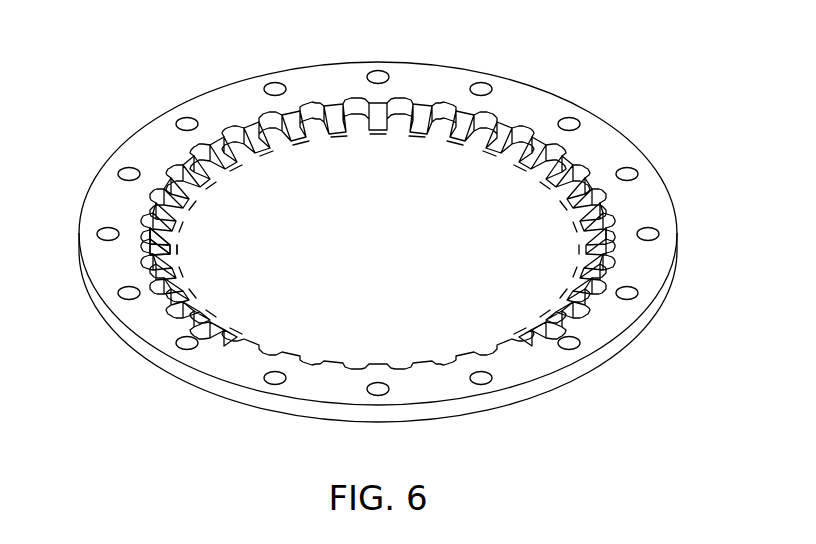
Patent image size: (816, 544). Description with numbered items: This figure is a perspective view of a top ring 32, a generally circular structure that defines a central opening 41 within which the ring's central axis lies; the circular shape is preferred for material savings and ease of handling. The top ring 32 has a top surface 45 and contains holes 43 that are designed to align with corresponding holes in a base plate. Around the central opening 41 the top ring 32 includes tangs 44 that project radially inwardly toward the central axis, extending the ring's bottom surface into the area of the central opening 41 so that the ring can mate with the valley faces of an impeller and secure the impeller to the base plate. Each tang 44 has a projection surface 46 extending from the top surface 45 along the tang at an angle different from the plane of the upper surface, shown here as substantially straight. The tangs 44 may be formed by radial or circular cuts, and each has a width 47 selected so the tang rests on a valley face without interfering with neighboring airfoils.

The top ring 32 is at (538, 106).
The central opening 41 is at (392, 248).
The holes 43 is at (378, 70).
The tangs 44 is at (203, 178).
The top surface 45 is at (580, 331).
The projection surface 46 is at (178, 252).
The width 47 is at (250, 173).